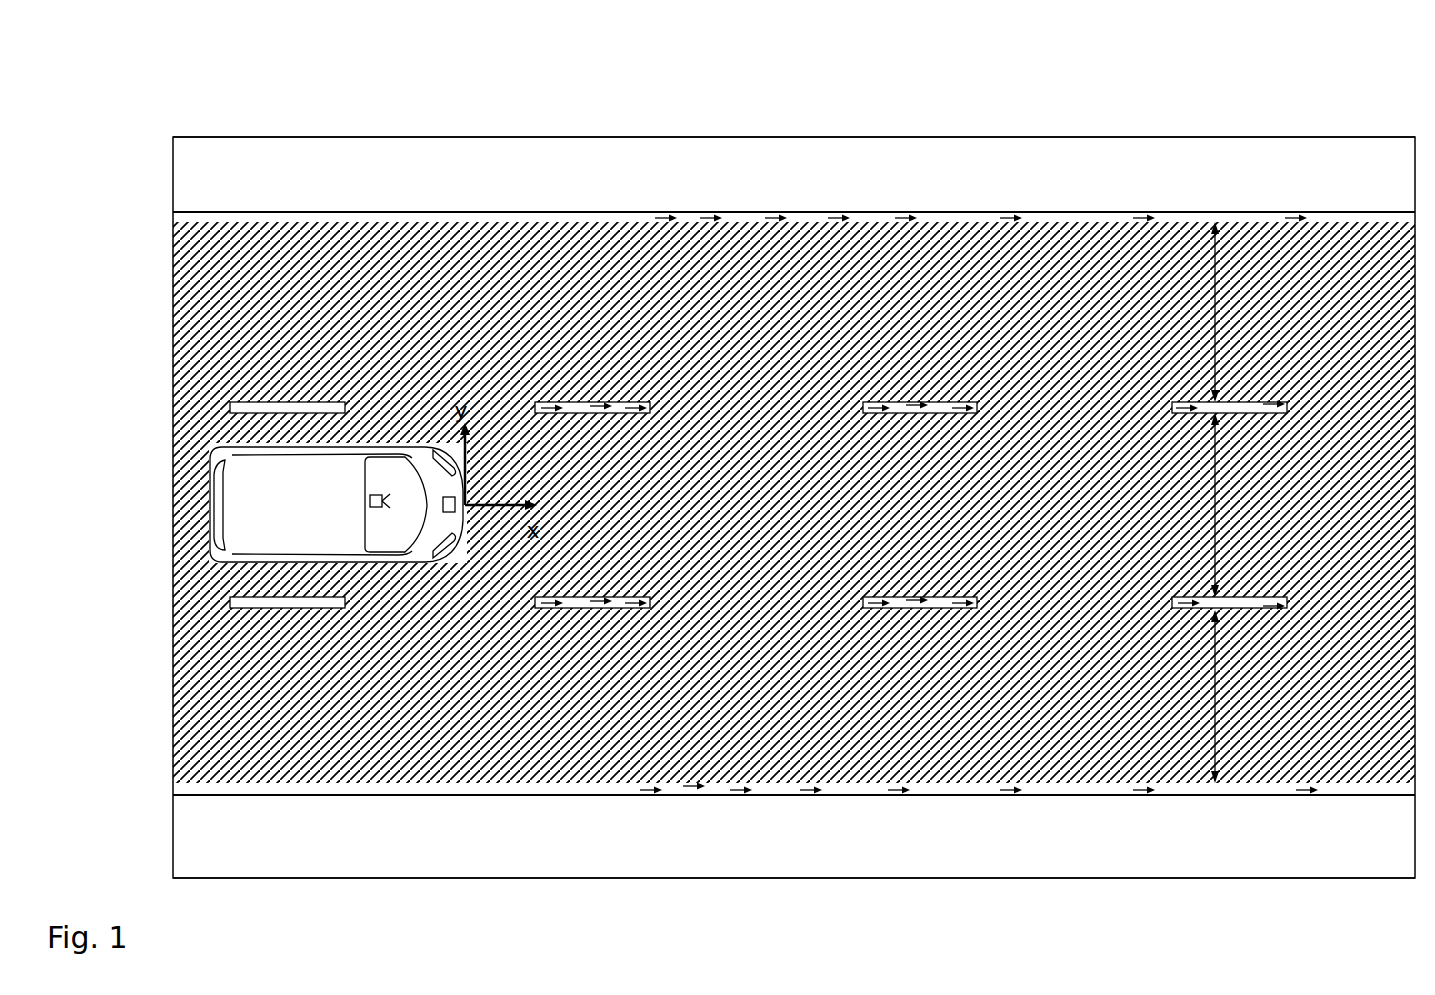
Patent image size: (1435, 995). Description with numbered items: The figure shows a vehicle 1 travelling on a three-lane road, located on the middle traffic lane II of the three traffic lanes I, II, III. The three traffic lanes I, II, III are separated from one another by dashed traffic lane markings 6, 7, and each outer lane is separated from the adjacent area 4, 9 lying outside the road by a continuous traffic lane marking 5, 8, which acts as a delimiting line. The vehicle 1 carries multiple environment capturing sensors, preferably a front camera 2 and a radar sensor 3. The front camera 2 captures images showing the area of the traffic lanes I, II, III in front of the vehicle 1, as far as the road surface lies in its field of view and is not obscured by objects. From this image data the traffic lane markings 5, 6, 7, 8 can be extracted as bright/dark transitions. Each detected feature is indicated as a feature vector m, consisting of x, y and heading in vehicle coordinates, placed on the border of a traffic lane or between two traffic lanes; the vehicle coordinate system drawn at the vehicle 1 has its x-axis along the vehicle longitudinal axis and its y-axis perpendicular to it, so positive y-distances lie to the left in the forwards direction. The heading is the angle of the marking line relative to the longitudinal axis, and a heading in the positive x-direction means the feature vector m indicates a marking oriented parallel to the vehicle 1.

The vehicle 1 is at (315, 495).
The front camera 2 is at (375, 495).
The radar sensor 3 is at (450, 497).
The adjacent area 4 is at (228, 170).
The continuous traffic lane marking 5 is at (228, 217).
The dashed traffic lane marking 6 is at (228, 410).
The dashed traffic lane marking 7 is at (228, 603).
The continuous traffic lane marking 8 is at (228, 790).
The adjacent area 9 is at (228, 840).
The feature vector m is at (745, 783).
The traffic lane I is at (1233, 312).
The middle traffic lane II is at (1238, 505).
The traffic lane III is at (1248, 696).